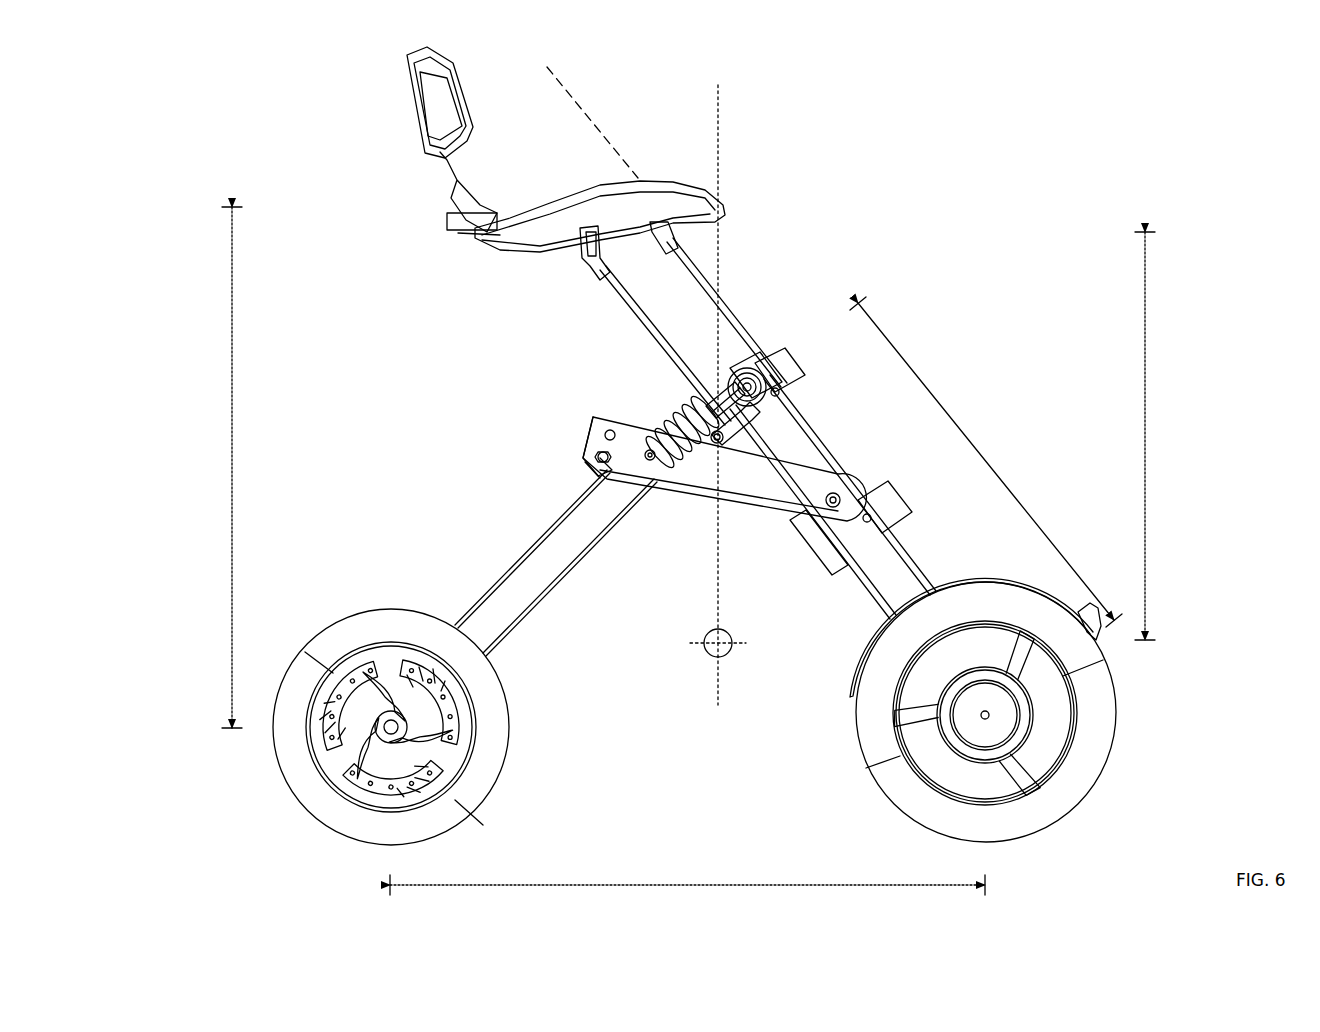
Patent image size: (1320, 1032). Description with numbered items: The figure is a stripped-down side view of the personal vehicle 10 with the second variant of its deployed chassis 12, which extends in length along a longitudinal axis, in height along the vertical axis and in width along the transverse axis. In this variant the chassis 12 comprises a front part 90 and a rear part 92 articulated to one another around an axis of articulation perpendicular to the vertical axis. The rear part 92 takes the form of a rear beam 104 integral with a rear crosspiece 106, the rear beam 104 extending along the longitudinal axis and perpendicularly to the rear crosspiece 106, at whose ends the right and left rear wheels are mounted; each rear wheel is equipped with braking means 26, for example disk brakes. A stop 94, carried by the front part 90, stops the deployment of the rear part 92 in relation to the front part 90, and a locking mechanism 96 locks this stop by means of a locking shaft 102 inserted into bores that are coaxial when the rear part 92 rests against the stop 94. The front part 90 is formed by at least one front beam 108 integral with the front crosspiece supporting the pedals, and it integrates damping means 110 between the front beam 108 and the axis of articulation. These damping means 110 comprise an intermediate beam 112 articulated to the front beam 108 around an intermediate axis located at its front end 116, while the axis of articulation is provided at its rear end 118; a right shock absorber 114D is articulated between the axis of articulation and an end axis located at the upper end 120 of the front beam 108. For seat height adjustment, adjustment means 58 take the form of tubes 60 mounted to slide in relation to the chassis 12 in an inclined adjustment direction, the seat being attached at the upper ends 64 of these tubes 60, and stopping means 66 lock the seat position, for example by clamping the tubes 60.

The personal vehicle 10 is at (914, 110).
The chassis 12 is at (600, 588).
The braking means 26 is at (336, 652).
The means for adjusting the height of the seat 58 is at (791, 320).
The tubes 60 is at (652, 318).
The upper ends of the tubes 64 is at (596, 276).
The means for stopping the motion of the tubes 66 is at (716, 444).
The front part 90 is at (914, 463).
The rear part 92 is at (526, 480).
The stop 94 is at (588, 472).
The locking mechanism 96 is at (522, 414).
The locking shaft 102 is at (594, 455).
The rear beam 104 is at (516, 618).
The rear crosspiece 106 is at (396, 658).
The front beam 108 is at (900, 574).
The damping means 110 is at (738, 516).
The intermediate beam 112 is at (786, 474).
The right shock absorber 114D is at (690, 420).
The front end of the intermediate beam 116 is at (833, 530).
The rear end of the intermediate beam 118 is at (602, 414).
The upper end of the front beam 120 is at (762, 362).